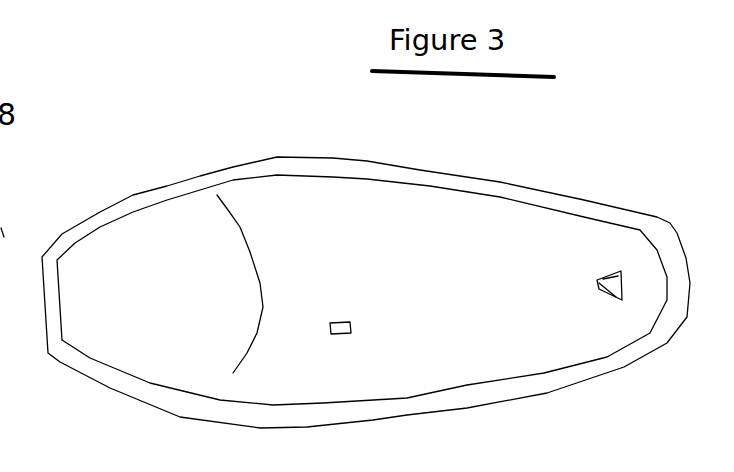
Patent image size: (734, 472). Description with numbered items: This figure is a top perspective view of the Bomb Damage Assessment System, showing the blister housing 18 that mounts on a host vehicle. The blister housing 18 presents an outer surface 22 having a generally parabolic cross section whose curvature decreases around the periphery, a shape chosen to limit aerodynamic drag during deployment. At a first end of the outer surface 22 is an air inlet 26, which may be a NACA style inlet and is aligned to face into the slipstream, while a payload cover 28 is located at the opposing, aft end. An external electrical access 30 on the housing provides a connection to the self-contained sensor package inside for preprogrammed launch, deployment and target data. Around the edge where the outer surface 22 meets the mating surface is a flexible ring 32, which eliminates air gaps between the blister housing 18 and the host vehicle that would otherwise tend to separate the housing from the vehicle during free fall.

The blister housing 18 is at (389, 146).
The outer surface 22 is at (445, 237).
The air inlet 26 is at (618, 272).
The payload cover 28 is at (170, 253).
The external electrical access 30 is at (340, 333).
The flexible ring 32 is at (286, 163).